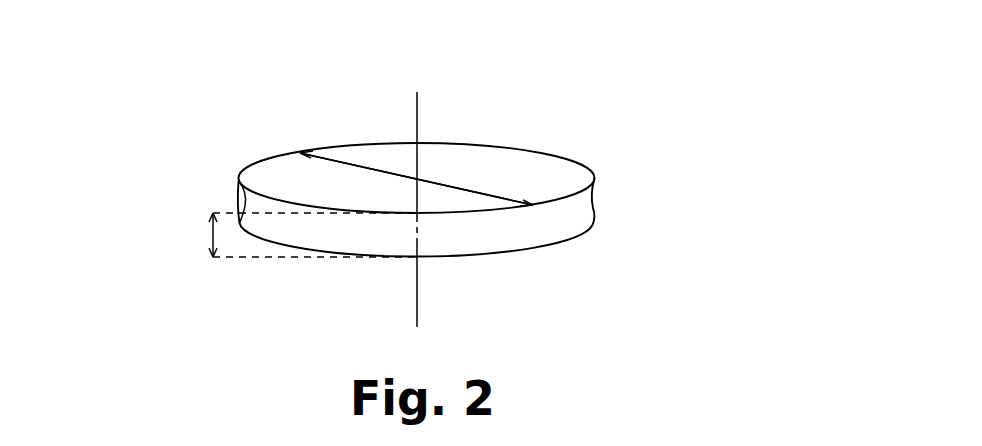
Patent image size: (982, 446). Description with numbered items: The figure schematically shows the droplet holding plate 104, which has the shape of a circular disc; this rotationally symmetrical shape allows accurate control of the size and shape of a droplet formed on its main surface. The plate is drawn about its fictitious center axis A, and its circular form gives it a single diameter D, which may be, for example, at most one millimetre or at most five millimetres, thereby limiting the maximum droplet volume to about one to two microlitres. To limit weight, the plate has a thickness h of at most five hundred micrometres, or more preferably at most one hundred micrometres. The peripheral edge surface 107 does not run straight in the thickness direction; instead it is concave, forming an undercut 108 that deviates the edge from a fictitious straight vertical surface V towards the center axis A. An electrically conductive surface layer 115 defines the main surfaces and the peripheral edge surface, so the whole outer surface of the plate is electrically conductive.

The droplet holding plate 104 is at (624, 132).
The electrically conductive surface layer 115 is at (490, 167).
The peripheral edge surface 107 is at (547, 222).
The undercut 108 is at (240, 198).
The center axis A is at (416, 189).
The diameter D is at (350, 165).
The thickness h is at (212, 237).
The vertical surface V is at (238, 197).